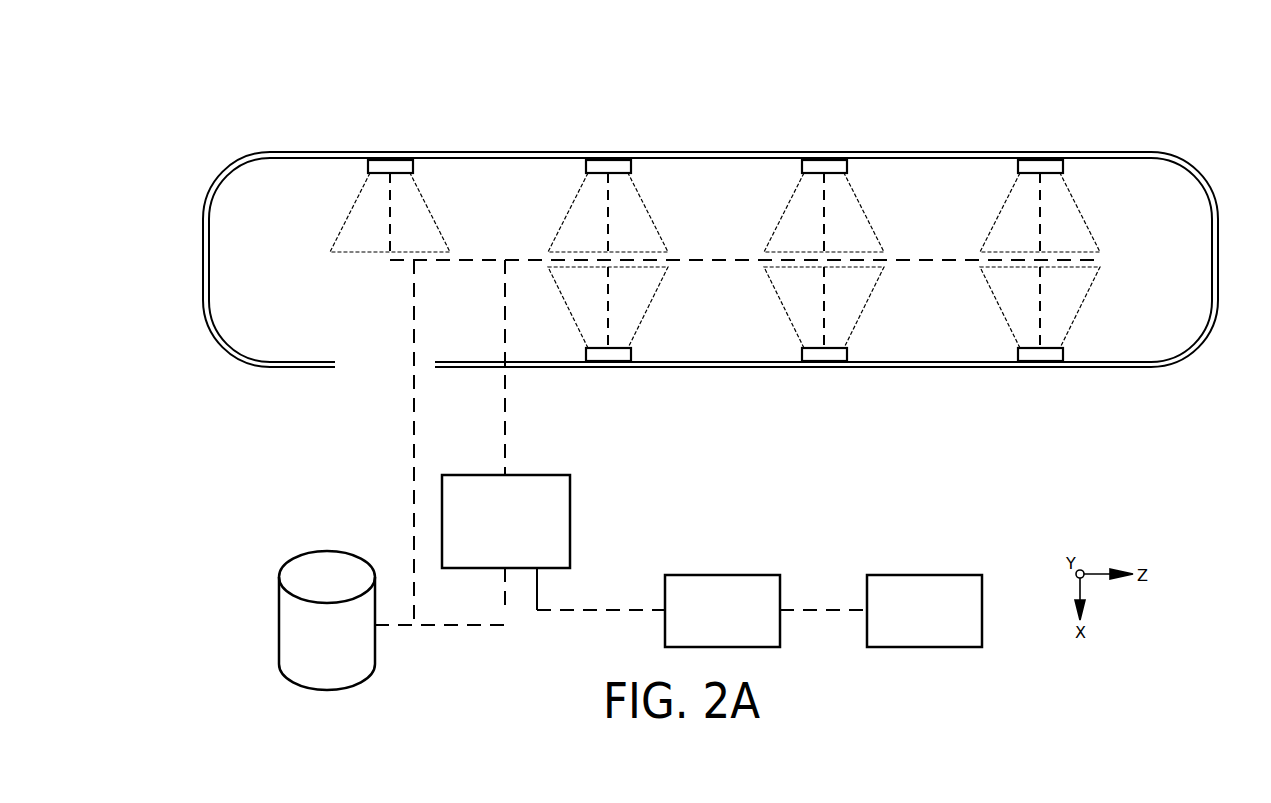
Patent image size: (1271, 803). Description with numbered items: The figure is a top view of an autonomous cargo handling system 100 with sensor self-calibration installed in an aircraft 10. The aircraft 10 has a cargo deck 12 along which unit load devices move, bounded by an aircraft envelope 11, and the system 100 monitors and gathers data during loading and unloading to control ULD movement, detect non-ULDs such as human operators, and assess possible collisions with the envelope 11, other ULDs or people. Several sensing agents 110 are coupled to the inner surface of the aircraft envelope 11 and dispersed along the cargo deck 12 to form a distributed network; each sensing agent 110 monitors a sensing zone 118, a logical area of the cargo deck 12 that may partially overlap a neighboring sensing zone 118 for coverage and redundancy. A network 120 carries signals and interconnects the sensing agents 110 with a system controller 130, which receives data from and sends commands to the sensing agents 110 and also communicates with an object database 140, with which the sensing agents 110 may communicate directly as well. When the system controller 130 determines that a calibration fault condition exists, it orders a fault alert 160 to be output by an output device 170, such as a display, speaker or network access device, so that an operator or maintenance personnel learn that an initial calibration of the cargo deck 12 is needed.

The autonomous cargo handling system 100 is at (496, 83).
The aircraft 10 is at (196, 205).
The aircraft envelope 11 is at (686, 152).
The cargo deck 12 is at (326, 331).
The network 120 is at (917, 262).
The sensing agent 110 is at (385, 160).
The sensing zone 118 is at (358, 197).
The system controller 130 is at (570, 505).
The object database 140 is at (279, 611).
The fault alert 160 is at (715, 575).
The output device 170 is at (924, 575).